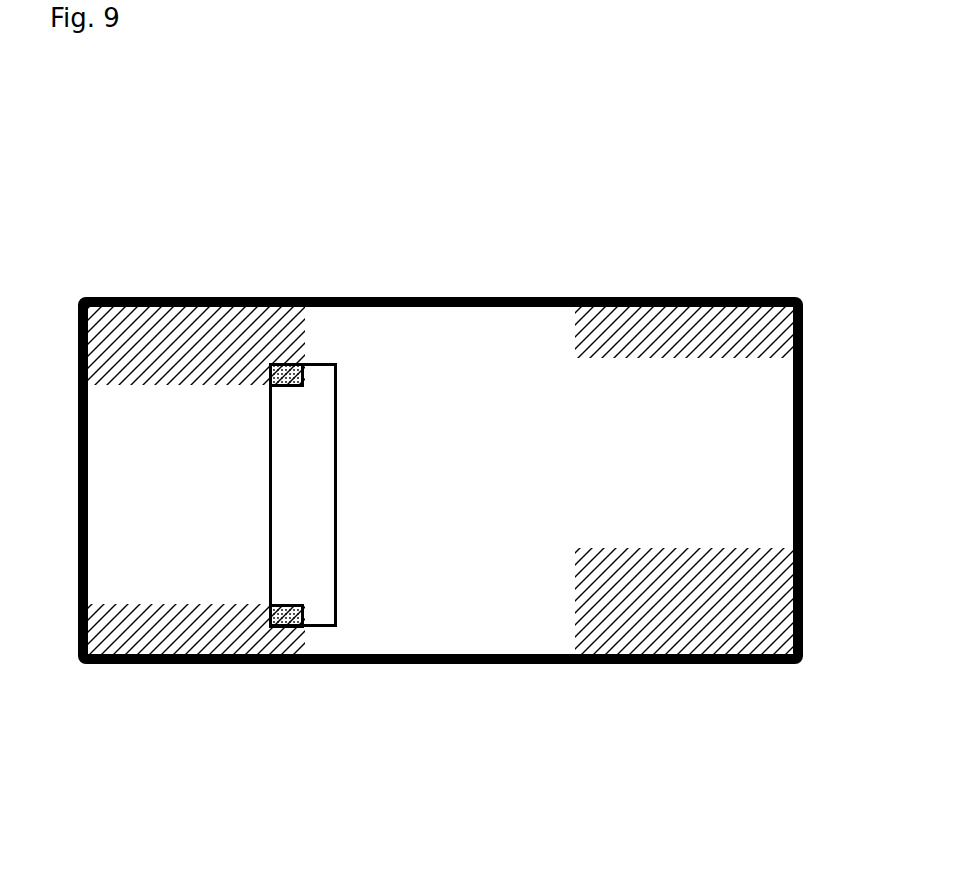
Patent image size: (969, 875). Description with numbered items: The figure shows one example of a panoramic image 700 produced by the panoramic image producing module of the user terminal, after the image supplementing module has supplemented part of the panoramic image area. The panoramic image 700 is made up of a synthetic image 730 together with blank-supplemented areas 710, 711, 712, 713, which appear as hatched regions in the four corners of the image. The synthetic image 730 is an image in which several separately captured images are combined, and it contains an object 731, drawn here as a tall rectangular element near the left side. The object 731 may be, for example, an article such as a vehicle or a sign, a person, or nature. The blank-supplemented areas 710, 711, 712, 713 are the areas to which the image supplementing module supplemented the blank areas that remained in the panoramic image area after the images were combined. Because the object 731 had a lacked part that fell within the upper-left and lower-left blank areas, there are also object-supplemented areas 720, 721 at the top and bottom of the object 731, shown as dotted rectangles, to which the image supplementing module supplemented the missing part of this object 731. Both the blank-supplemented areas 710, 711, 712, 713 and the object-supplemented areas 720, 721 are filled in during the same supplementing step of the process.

The panoramic image 700 is at (803, 353).
The blank-supplemented area 710 is at (98, 335).
The blank-supplemented area 711 is at (98, 641).
The blank-supplemented area 712 is at (800, 317).
The blank-supplemented area 713 is at (802, 570).
The object-supplemented area 720 is at (283, 373).
The object-supplemented area 721 is at (288, 624).
The synthetic image 730 is at (499, 352).
The object 731 is at (316, 385).